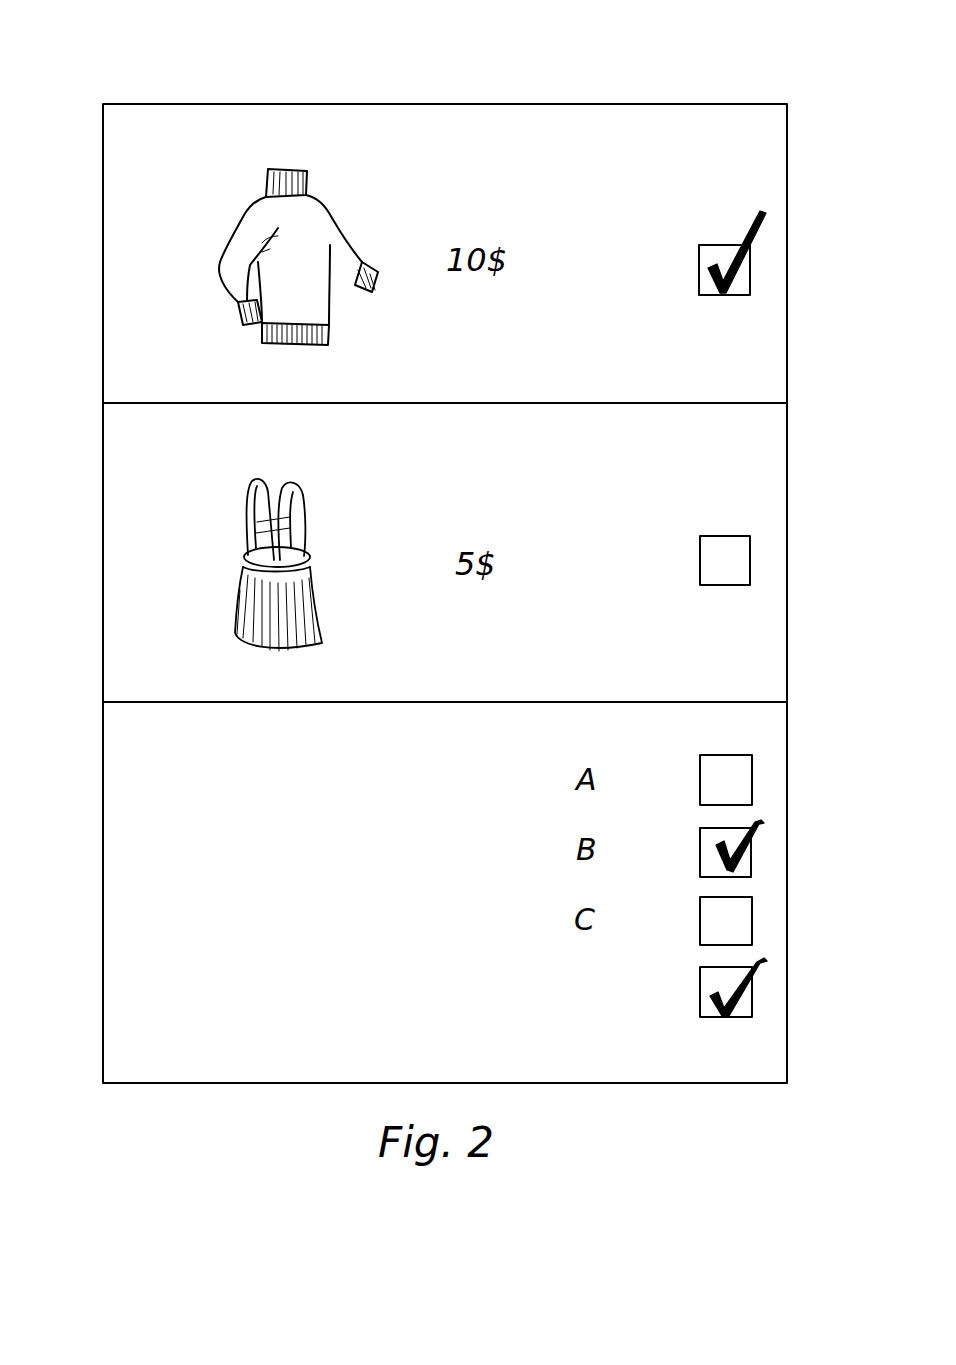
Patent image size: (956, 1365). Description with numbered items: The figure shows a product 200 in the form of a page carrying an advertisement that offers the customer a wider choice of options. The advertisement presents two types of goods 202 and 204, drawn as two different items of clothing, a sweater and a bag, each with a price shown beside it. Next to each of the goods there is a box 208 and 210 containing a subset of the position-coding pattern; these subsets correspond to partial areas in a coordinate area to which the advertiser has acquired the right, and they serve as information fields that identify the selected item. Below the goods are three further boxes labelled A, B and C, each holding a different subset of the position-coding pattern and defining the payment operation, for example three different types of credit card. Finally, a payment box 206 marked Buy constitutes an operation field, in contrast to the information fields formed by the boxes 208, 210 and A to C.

The product 200 is at (483, 136).
The goods 202 is at (240, 195).
The goods 204 is at (217, 588).
The payment box 206 is at (735, 1018).
The box 208 is at (713, 262).
The box 210 is at (732, 546).